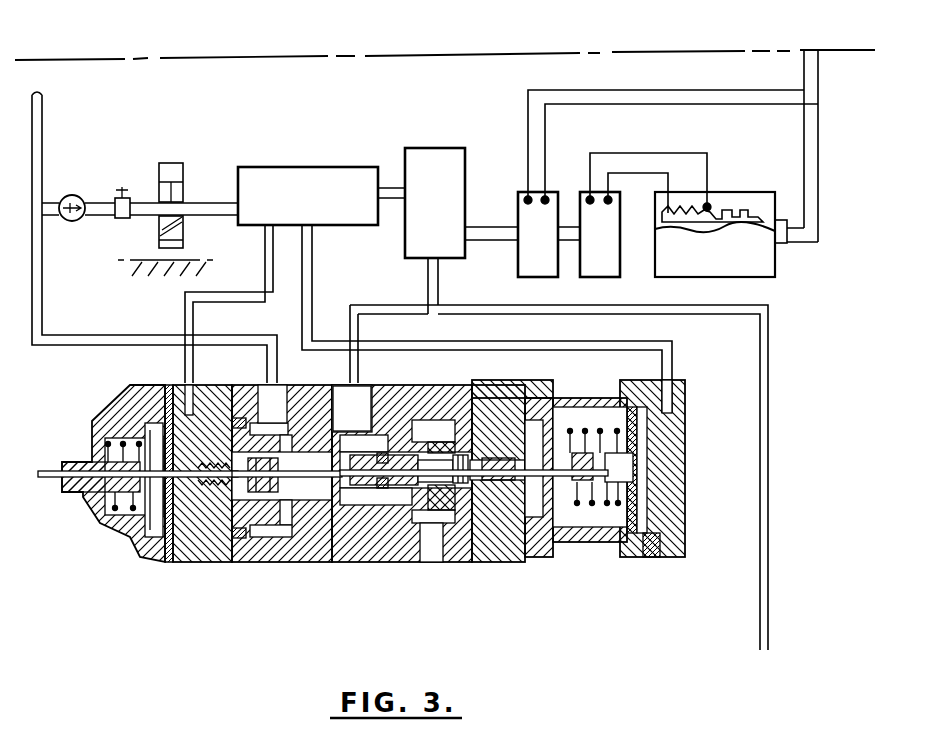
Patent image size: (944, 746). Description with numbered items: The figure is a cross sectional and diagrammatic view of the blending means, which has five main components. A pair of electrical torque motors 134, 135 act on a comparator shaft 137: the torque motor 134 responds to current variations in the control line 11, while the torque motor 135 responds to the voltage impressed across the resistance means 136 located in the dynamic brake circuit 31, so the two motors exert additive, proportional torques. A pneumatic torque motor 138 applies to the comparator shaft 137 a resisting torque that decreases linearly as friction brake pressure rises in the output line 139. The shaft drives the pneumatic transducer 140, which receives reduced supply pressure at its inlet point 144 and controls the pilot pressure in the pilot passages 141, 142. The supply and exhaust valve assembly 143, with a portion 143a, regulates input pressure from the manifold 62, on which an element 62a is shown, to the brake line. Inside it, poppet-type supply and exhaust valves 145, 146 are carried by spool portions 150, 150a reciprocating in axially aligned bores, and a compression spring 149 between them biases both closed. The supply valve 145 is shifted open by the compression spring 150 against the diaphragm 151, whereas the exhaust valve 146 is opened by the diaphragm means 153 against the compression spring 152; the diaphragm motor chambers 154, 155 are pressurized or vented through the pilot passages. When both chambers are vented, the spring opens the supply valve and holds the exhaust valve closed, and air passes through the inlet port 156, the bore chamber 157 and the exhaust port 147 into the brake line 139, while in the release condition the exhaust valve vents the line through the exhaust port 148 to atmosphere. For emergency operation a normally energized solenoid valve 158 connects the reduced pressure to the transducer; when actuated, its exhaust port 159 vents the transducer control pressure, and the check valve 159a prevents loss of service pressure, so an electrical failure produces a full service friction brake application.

The control line 11 is at (276, 44).
The dynamic brake circuit 31 is at (755, 266).
The manifold 62 is at (38, 127).
The valve 62a is at (122, 188).
The electrical torque motor 134 is at (548, 195).
The electrical torque motor 135 is at (603, 260).
The resistance means 136 is at (686, 212).
The comparator shaft 137 is at (488, 226).
The pneumatic torque motor 138 is at (425, 150).
The output line 139 is at (795, 351).
The pneumatic transducer 140 is at (303, 167).
The pilot passage 141 is at (186, 320).
The pilot passage 142 is at (301, 328).
The supply and exhaust valve assembly 143 is at (327, 552).
The valve body port 143a is at (314, 455).
The inlet point 144 is at (235, 207).
The supply valve 145 is at (322, 485).
The exhaust valve 146 is at (387, 500).
The exhaust port 147 is at (362, 389).
The exhaust port 148 is at (436, 552).
The compression spring 149 is at (349, 460).
The compression spring 150 is at (108, 508).
The spool portion 150a is at (412, 462).
The diaphragm 151 is at (152, 550).
The compression spring 152 is at (585, 432).
The diaphragm means 153 is at (640, 521).
The diaphragm motor chamber 154 is at (178, 558).
The diaphragm motor chamber 155 is at (650, 538).
The inlet port 156 is at (288, 392).
The bore chamber 157 is at (378, 503).
The solenoid valve 158 is at (172, 165).
The exhaust port 159 is at (165, 228).
The check valve 159a is at (69, 196).